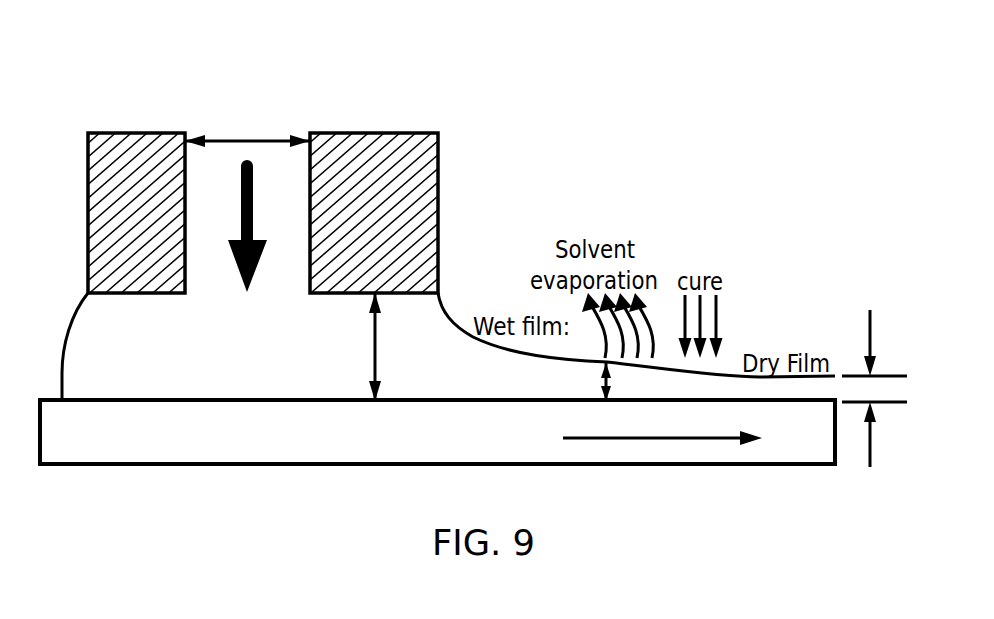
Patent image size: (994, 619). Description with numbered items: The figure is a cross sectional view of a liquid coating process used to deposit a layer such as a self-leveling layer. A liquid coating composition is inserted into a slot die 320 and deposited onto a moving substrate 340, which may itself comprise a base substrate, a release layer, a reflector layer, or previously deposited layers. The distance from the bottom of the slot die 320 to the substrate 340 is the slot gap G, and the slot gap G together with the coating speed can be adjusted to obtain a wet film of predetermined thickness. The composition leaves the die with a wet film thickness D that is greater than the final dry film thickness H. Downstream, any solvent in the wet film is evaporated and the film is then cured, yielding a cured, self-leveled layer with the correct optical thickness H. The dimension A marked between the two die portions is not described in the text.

The slot die 320 is at (373, 133).
The substrate 340 is at (89, 464).
The slot gap width A is at (247, 130).
The slot gap G is at (384, 347).
The wet film thickness D is at (598, 382).
The dry film thickness H is at (874, 388).